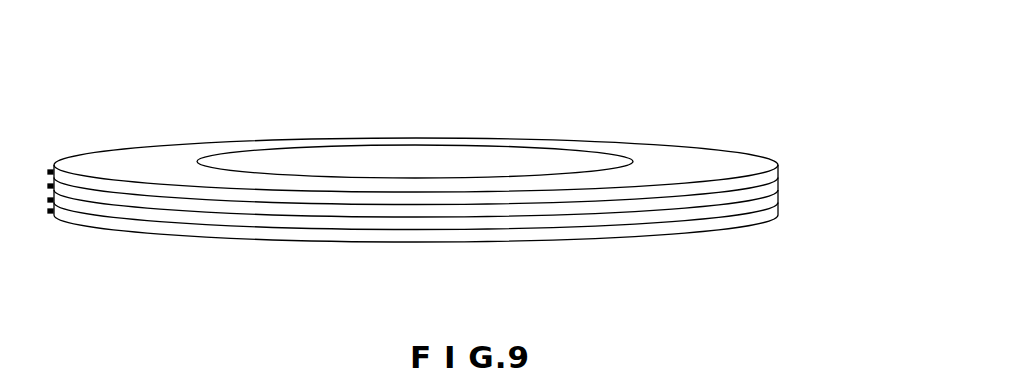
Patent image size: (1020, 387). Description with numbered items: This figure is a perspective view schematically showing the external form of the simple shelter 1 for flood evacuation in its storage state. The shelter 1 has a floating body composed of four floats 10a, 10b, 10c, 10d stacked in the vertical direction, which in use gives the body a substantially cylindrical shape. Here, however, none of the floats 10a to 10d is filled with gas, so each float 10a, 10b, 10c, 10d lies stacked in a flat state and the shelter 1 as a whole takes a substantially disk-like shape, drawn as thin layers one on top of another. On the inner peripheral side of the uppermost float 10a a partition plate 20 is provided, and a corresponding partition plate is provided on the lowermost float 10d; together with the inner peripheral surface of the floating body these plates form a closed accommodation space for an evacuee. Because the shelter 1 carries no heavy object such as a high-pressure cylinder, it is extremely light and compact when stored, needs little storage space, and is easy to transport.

The shelter 1 is at (799, 111).
The partition plate 20 is at (402, 163).
The uppermost float 10a is at (778, 164).
The float 10b is at (778, 180).
The float 10c is at (778, 197).
The lowermost float 10d is at (778, 213).